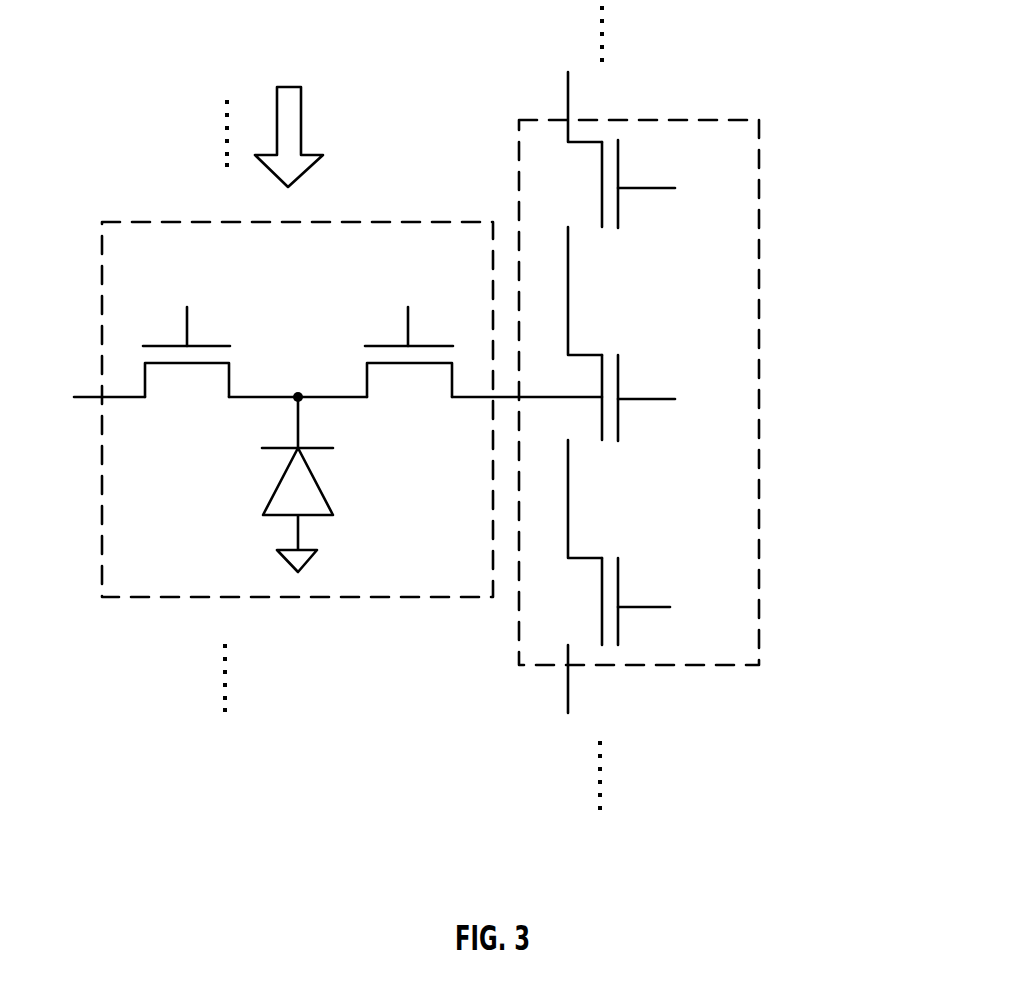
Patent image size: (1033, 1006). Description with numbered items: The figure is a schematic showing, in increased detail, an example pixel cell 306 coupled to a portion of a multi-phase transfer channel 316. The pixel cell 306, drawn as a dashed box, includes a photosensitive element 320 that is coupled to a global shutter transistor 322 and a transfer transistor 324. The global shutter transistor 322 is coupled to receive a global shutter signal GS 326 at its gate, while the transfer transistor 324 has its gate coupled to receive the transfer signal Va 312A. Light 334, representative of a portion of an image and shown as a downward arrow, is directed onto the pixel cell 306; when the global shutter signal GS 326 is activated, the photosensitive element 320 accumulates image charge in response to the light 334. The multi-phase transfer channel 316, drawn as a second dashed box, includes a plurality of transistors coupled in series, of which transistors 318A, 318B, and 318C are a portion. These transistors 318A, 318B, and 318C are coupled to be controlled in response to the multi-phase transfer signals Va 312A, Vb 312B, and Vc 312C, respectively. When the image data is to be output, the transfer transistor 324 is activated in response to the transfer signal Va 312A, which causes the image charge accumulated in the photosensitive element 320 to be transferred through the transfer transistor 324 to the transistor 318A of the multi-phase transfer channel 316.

The pixel cell 306 is at (120, 222).
The light 334 is at (313, 128).
The global shutter signal GS 326 is at (215, 287).
The multi-phase transfer signal Va 312A is at (395, 282).
The global shutter transistor 322 is at (178, 393).
The transfer transistor 324 is at (413, 402).
The photosensitive element 320 is at (268, 477).
The multi-phase transfer channel 316 is at (757, 120).
The transistor 318C is at (637, 180).
The multi-phase transfer signal Vc 312C is at (738, 188).
The transistor 318A is at (628, 377).
The transistor 318B is at (628, 588).
The multi-phase transfer signal Vb 312B is at (732, 603).